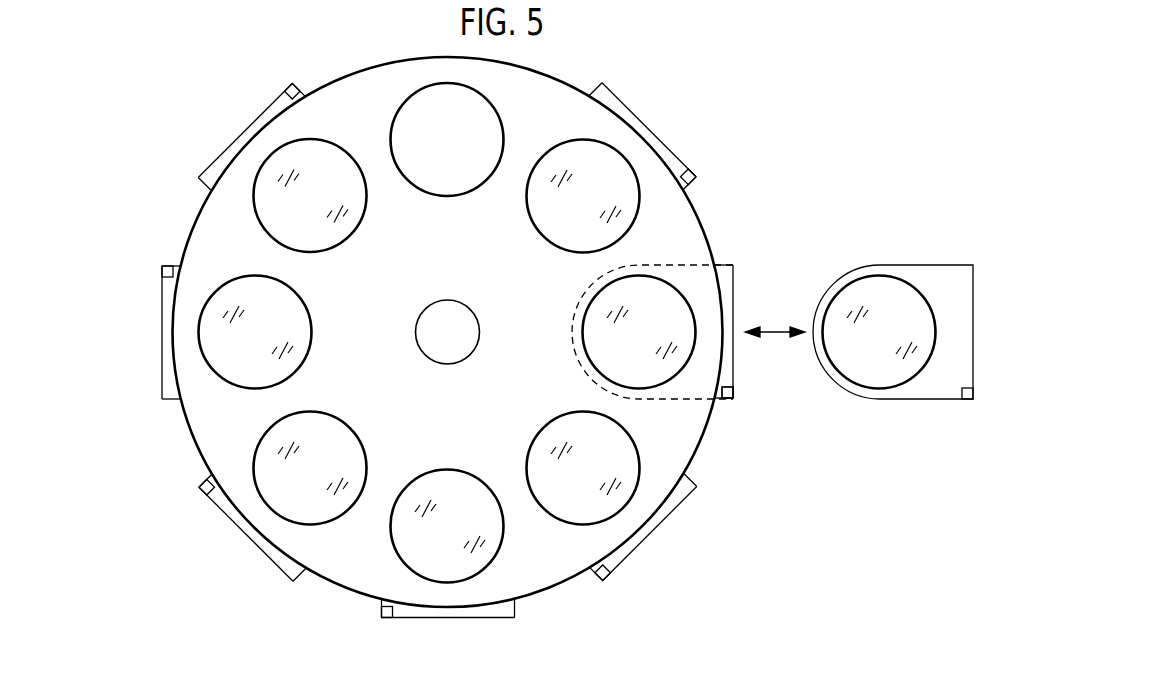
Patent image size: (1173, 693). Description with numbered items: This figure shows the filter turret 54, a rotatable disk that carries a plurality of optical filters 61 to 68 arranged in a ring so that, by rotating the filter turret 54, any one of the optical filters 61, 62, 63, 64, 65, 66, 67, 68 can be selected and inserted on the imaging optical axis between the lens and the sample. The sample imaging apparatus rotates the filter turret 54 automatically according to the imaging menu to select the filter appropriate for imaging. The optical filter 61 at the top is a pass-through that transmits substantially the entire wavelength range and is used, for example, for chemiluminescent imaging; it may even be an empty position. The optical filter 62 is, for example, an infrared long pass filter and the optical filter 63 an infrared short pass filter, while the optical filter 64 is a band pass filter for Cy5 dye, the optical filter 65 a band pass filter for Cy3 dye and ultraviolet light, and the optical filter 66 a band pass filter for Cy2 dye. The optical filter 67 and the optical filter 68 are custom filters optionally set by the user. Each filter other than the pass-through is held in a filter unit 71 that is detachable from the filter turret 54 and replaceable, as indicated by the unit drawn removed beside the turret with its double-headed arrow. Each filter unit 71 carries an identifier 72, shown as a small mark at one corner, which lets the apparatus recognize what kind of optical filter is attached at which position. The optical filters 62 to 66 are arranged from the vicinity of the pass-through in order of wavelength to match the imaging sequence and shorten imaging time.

The filter turret 54 is at (150, 180).
The optical filter 61 is at (448, 188).
The optical filter 62 is at (341, 236).
The optical filter 63 is at (303, 330).
The optical filter 64 is at (345, 432).
The optical filter 65 is at (440, 473).
The optical filter 66 is at (546, 433).
The optical filter 67 is at (583, 342).
The optical filter 68 is at (547, 232).
The filter unit 71 is at (920, 265).
The identifier 72 is at (726, 399).